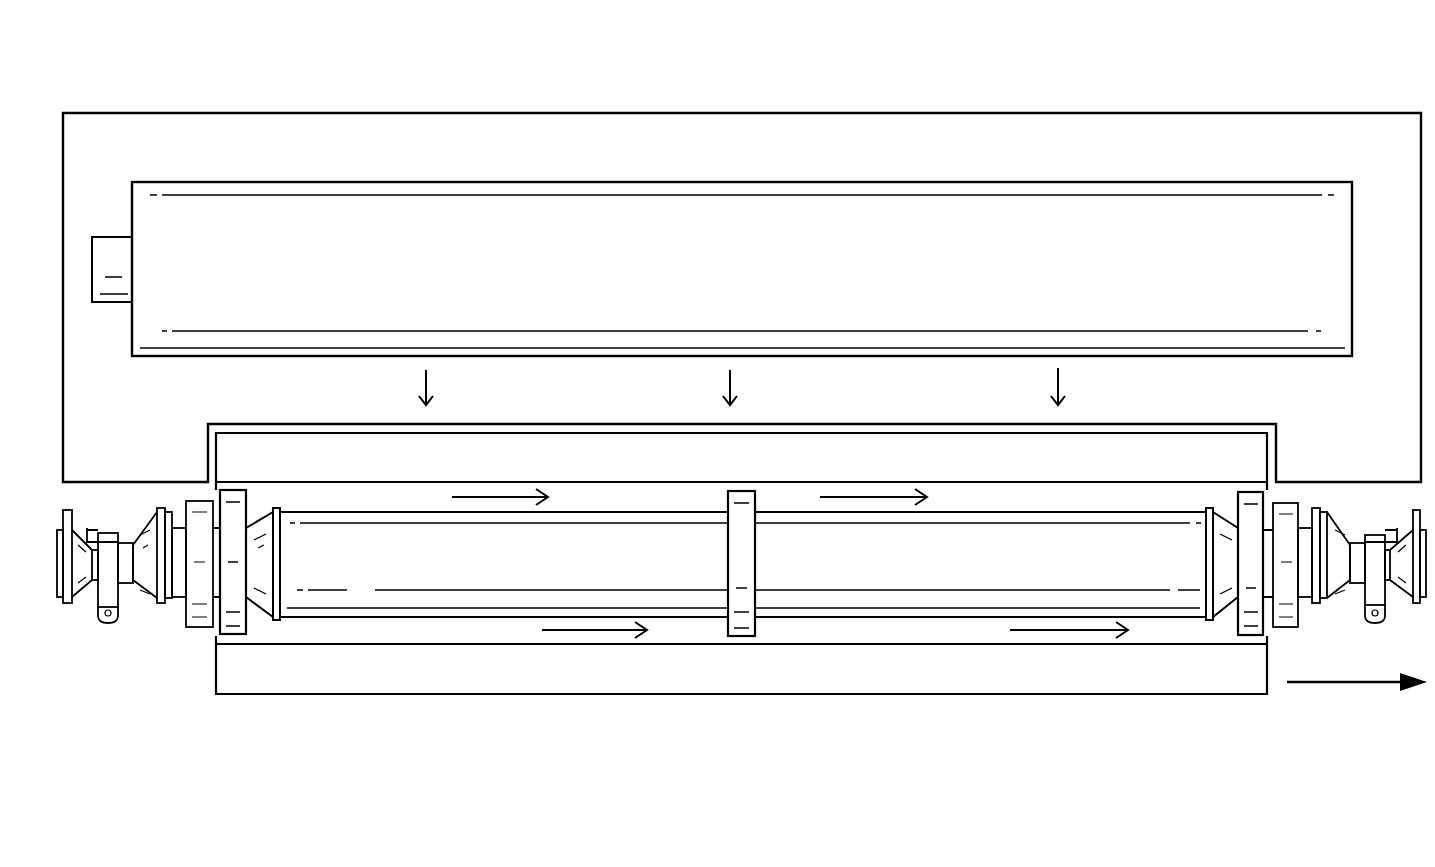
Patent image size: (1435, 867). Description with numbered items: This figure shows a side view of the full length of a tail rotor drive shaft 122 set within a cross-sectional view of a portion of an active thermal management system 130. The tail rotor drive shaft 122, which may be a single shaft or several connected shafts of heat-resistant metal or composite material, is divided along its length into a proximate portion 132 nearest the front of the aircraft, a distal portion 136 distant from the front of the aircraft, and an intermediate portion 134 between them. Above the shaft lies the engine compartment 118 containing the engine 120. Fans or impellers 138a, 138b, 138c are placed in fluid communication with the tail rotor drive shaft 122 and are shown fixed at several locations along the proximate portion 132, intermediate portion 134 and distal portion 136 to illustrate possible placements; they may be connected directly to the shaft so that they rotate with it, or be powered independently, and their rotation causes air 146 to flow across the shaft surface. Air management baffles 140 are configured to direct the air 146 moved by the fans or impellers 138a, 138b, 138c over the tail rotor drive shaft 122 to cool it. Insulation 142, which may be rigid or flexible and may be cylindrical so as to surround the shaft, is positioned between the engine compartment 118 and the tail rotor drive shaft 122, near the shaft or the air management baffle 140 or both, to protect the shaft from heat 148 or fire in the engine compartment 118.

The active thermal management system 130 is at (1253, 84).
The engine compartment 118 is at (720, 162).
The engine 120 is at (720, 285).
The tail rotor drive shaft 122 is at (492, 575).
The proximate portion 132 is at (358, 583).
The intermediate portion 134 is at (763, 595).
The distal portion 136 is at (1188, 585).
The fan or impeller 138a is at (1252, 492).
The fan or impeller 138b is at (740, 491).
The fan or impeller 138c is at (232, 490).
The air management baffle 140 is at (958, 502).
The insulation 142 is at (627, 470).
The air 146 is at (500, 492).
The heat 148 is at (420, 386).